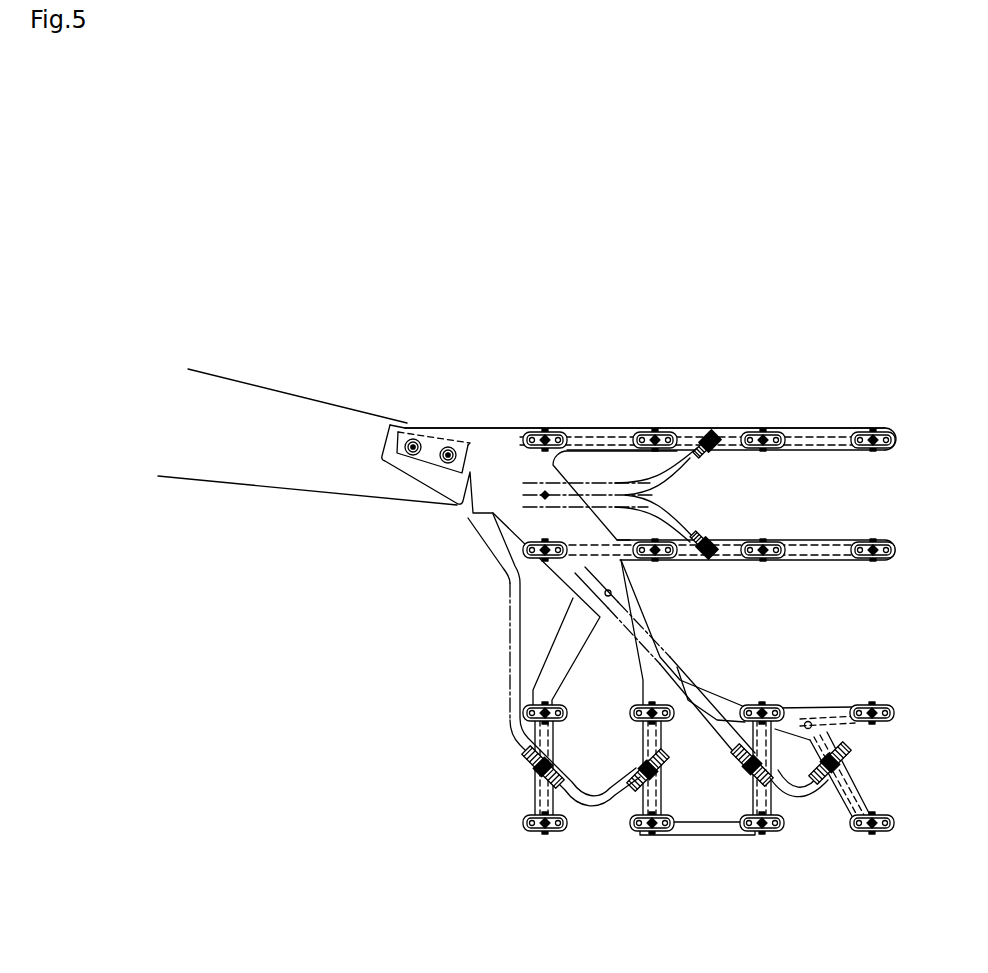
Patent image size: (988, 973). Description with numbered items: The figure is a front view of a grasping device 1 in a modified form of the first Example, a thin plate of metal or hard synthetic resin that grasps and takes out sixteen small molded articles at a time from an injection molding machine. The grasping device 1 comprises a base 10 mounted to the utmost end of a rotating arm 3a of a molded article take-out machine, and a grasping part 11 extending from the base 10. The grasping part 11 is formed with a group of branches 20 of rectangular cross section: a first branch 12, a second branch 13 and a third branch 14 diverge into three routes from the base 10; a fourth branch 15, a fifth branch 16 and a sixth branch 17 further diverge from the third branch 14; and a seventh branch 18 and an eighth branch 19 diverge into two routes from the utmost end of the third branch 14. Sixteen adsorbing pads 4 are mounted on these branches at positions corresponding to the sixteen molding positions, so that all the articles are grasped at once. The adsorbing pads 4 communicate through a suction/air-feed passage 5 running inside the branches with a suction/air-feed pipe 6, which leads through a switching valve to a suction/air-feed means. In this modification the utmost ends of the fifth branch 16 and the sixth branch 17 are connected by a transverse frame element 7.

The grasping device 1 is at (740, 424).
The rotating arm 3a is at (289, 463).
The adsorbing pads 4 is at (560, 432).
The suction/air-feed passage 5 is at (695, 430).
The suction/air-feed pipe 6 is at (682, 516).
The transverse frame element 7 is at (697, 833).
The base 10 is at (428, 455).
The grasping part 11 is at (822, 423).
The first branch 12 is at (607, 428).
The second branch 13 is at (807, 537).
The third branch 14 is at (642, 611).
The fourth branch 15 is at (558, 680).
The fifth branch 16 is at (665, 745).
The sixth branch 17 is at (767, 832).
The seventh branch 18 is at (838, 706).
The eighth branch 19 is at (880, 805).
The group of branches 20 is at (655, 648).